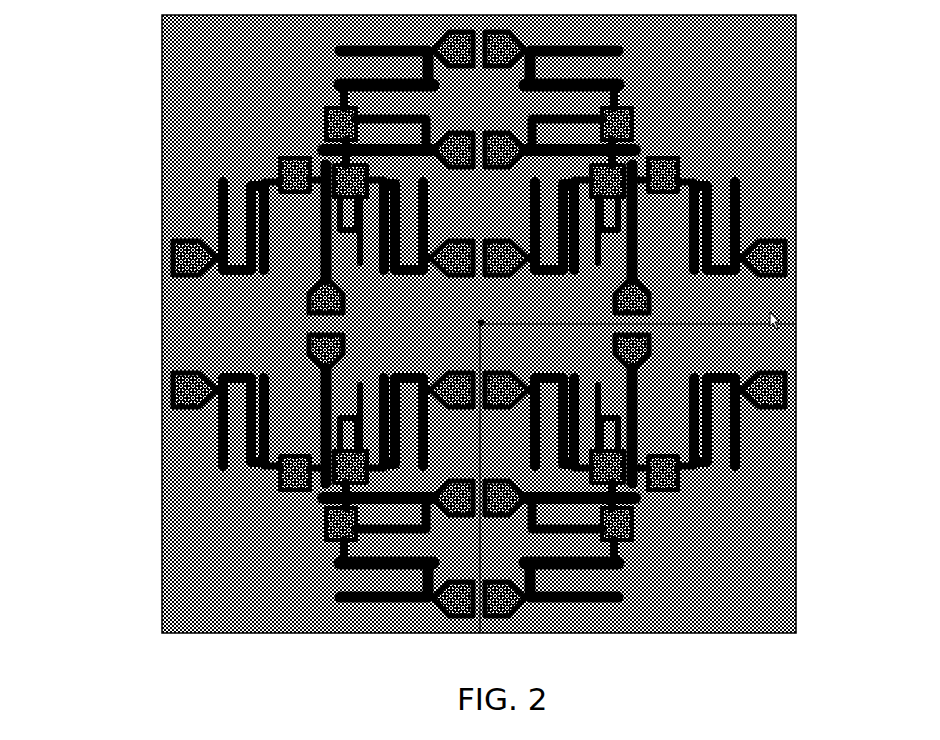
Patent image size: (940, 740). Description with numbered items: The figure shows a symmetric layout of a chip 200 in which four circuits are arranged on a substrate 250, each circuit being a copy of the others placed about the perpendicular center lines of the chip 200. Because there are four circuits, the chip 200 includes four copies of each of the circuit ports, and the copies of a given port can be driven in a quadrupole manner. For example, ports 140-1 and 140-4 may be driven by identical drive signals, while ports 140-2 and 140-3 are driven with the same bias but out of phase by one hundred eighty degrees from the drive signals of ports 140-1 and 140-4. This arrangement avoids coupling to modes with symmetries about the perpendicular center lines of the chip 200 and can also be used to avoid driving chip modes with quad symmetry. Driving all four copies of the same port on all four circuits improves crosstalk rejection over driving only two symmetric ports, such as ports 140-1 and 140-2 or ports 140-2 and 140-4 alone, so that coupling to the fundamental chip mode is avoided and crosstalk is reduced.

The chip 200 is at (805, 116).
The substrate 250 is at (238, 64).
The port 140-1 is at (175, 247).
The port 140-2 is at (785, 248).
The port 140-3 is at (175, 395).
The port 140-4 is at (780, 383).